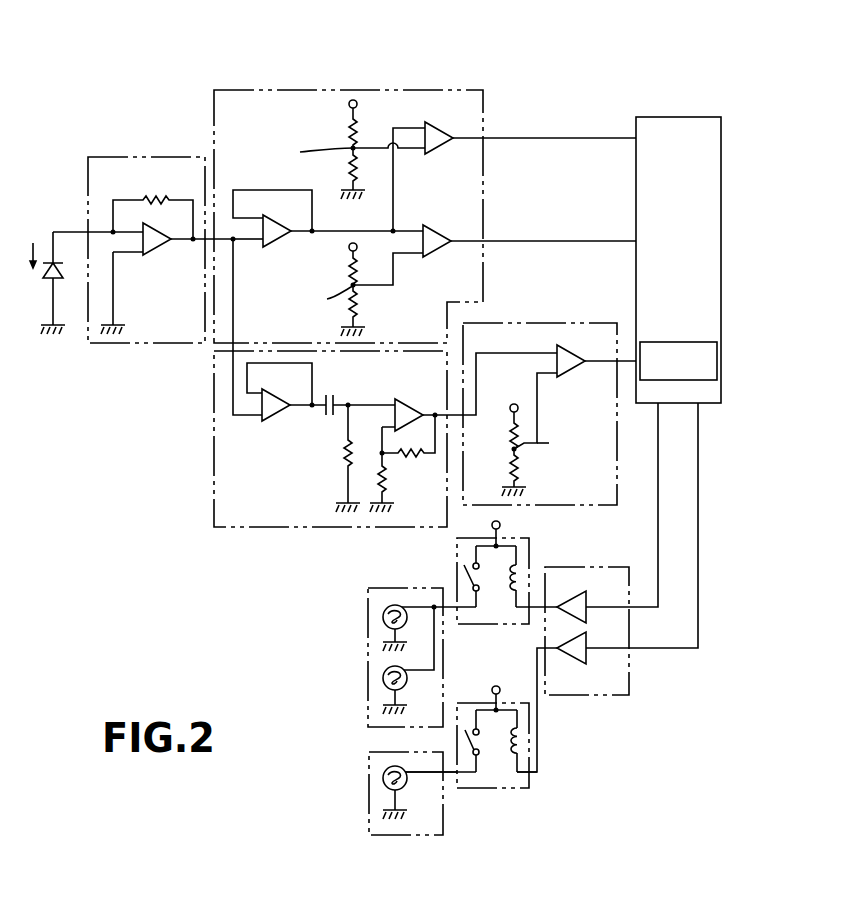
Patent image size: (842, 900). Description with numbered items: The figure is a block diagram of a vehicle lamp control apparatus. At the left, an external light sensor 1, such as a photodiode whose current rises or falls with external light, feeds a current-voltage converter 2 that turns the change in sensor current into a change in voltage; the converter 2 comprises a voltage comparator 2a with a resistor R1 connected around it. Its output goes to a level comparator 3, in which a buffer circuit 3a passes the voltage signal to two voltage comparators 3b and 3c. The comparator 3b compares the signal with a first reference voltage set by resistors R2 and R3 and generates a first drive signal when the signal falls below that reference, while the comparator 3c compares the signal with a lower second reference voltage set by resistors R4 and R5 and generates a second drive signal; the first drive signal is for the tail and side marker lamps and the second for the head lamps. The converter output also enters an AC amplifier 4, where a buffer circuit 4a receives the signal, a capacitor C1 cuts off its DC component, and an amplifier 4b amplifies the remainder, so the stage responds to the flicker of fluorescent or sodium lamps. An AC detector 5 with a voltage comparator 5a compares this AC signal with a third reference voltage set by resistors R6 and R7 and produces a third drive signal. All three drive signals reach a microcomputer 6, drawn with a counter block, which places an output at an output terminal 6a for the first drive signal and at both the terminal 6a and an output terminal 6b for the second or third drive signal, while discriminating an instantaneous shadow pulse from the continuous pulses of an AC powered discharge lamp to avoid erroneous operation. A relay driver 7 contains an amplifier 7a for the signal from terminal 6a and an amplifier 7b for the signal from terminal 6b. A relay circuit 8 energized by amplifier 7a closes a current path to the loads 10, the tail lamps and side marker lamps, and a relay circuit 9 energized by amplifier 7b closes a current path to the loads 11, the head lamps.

The external light sensor 1 is at (60, 272).
The current-voltage converter 2 is at (138, 157).
The voltage comparator 2a is at (157, 253).
The level comparator 3 is at (280, 90).
The buffer circuit 3a is at (280, 247).
The voltage comparator 3b is at (440, 150).
The voltage comparator 3c is at (440, 256).
The AC amplifier 4 is at (214, 465).
The buffer circuit 4a is at (278, 423).
The amplifier 4b is at (415, 390).
The AC detector 5 is at (568, 323).
The voltage comparator 5a is at (573, 375).
The microcomputer 6 is at (678, 117).
The output terminal 6a is at (658, 460).
The output terminal 6b is at (699, 460).
The relay driver 7 is at (629, 680).
The amplifier 7a is at (595, 583).
The amplifier 7b is at (587, 656).
The relay circuit 8 is at (530, 543).
The relay circuit 9 is at (513, 788).
The loads 10 is at (368, 660).
The loads 11 is at (369, 803).
The resistor R1 is at (153, 205).
The resistor R2 is at (337, 131).
The resistor R3 is at (337, 167).
The resistor R4 is at (334, 270).
The resistor R5 is at (366, 303).
The resistor R6 is at (499, 435).
The resistor R7 is at (528, 467).
The capacitor C1 is at (352, 392).